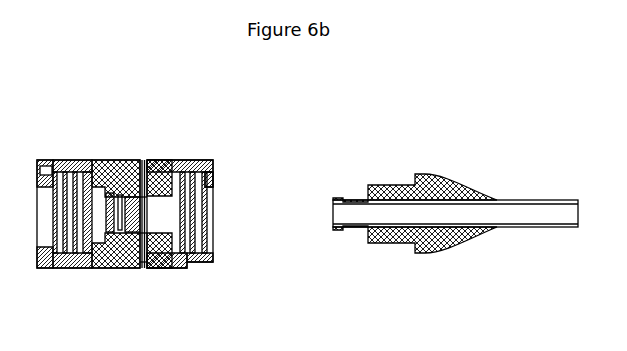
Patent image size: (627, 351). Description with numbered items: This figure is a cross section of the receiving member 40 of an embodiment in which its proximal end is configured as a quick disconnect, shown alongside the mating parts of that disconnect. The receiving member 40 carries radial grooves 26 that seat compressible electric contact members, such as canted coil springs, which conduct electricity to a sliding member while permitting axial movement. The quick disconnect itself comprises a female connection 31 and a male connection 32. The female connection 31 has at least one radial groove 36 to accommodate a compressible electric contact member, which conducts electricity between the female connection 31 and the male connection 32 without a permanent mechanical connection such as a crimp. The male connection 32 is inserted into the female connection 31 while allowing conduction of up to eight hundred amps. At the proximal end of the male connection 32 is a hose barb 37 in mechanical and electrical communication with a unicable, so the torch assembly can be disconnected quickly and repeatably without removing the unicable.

The receiving member 40 is at (92, 198).
The radial grooves 26 is at (83, 268).
The female connection 31 is at (218, 207).
The radial groove 36 is at (197, 160).
The male connection 32 is at (373, 165).
The hose barb 37 is at (565, 183).